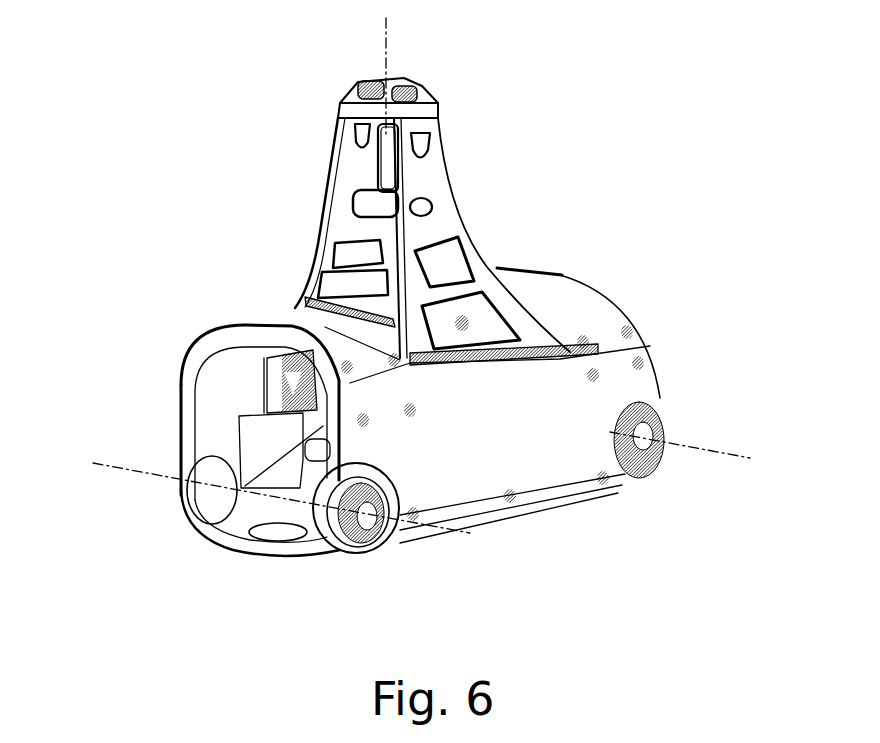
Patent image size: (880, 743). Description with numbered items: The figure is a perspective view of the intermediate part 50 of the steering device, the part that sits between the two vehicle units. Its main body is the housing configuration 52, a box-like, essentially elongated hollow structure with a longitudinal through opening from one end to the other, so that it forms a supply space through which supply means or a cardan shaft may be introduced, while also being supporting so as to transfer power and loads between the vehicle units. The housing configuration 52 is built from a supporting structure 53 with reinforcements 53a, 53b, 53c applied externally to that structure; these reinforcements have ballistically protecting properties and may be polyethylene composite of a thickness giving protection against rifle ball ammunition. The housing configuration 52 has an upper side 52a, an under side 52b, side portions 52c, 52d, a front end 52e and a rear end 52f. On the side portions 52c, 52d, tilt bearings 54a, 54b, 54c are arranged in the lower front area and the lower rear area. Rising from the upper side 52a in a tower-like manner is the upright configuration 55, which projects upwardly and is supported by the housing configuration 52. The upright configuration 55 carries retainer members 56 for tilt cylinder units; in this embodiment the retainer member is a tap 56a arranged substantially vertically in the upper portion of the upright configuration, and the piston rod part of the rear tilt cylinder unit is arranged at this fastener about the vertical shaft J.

The intermediate part 50 is at (520, 108).
The vertical shaft J is at (388, 52).
The housing configuration 52 is at (521, 281).
The upper side 52a is at (327, 323).
The under side 52b is at (277, 557).
The side portion 52c is at (450, 472).
The side portion 52d is at (177, 382).
The front end 52e is at (210, 445).
The rear end 52f is at (648, 347).
The supporting structure 53 is at (243, 532).
The reinforcement 53a is at (288, 323).
The reinforcement 53b is at (583, 298).
The reinforcement 53c is at (542, 470).
The tilt bearing 54a is at (367, 540).
The tilt bearing 54b is at (165, 490).
The tilt bearing 54c is at (655, 457).
The upright configuration 55 is at (443, 172).
The retainer member 56 is at (352, 100).
The tap 56a is at (387, 155).